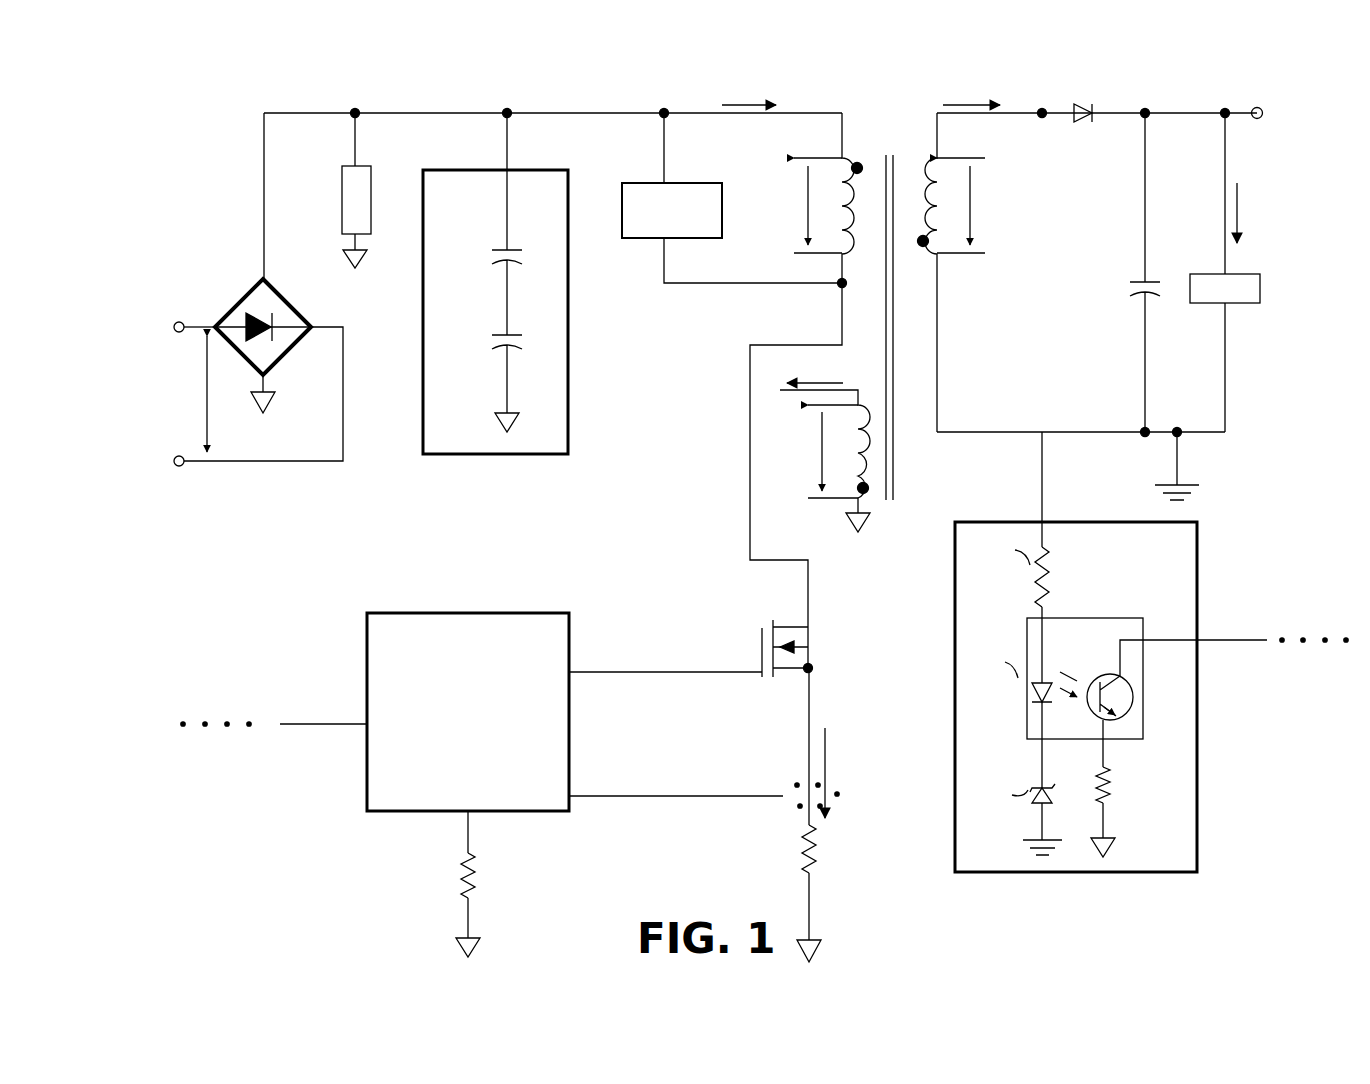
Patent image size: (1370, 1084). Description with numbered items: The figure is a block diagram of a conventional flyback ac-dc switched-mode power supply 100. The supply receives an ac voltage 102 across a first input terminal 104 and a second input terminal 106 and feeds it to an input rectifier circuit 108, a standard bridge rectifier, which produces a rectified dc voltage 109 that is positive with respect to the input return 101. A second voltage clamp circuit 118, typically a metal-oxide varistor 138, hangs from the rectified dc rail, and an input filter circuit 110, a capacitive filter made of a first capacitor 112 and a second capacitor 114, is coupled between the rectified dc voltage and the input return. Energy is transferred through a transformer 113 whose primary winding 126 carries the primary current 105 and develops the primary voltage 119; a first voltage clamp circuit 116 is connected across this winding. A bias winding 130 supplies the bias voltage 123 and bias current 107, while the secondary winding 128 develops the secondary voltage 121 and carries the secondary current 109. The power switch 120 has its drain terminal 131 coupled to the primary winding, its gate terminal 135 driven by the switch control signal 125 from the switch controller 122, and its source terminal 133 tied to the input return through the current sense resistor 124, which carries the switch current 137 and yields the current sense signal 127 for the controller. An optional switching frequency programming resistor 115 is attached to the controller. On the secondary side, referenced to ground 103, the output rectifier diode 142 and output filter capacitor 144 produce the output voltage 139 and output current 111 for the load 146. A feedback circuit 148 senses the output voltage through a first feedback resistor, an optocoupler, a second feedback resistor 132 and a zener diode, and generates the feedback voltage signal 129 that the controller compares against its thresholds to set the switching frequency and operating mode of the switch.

The ac-dc SMPS 100 is at (603, 78).
The input return 101 is at (280, 408).
The ac voltage Vac 102 is at (188, 393).
The ground 103 is at (1192, 482).
The input terminal ac1 104 is at (180, 297).
The primary current Ip 105 is at (740, 98).
The input terminal ac2 106 is at (249, 430).
The bias current Ib 107 is at (832, 378).
The input rectifier circuit 108 is at (292, 298).
The rectified dc voltage Vdc 109 is at (1005, 73).
The input filter circuit 110 is at (495, 283).
The output current Iout 111 is at (1243, 198).
The capacitor C1 112 is at (523, 230).
The transformer T1 113 is at (869, 287).
The capacitor C2 114 is at (525, 318).
The switching frequency programming resistor Rfset 115 is at (484, 872).
The first voltage clamp circuit 116 is at (732, 198).
The second voltage clamp circuit 118 is at (351, 190).
The primary voltage Vp 119 is at (800, 205).
The power switch S1 120 is at (797, 630).
The secondary voltage Vs 121 is at (988, 208).
The switch controller U1 122 is at (468, 712).
The bias voltage 123 is at (806, 456).
The current sense resistor Rsense 124 is at (818, 846).
The switch control signal 125 is at (684, 668).
The primary side inductor L1 126 is at (846, 222).
The current sense signal 127 is at (692, 792).
The secondary side inductor L2 128 is at (939, 216).
The feedback voltage signal Vfb 129 is at (198, 748).
The second primary side inductor L3 130 is at (852, 452).
The drain terminal 131 is at (812, 592).
The resistor R7 132 is at (1115, 775).
The source terminal 133 is at (816, 698).
The gate terminal 135 is at (737, 648).
The switch current Id 137 is at (832, 733).
The metal-oxide varistor MOV 138 is at (372, 178).
The output voltage Vout 139 is at (1258, 85).
The output rectifier diode D1 142 is at (1085, 102).
The output filter capacitor C3 144 is at (1138, 278).
The load 146 is at (1245, 272).
The feedback circuit 148 is at (754, 652).